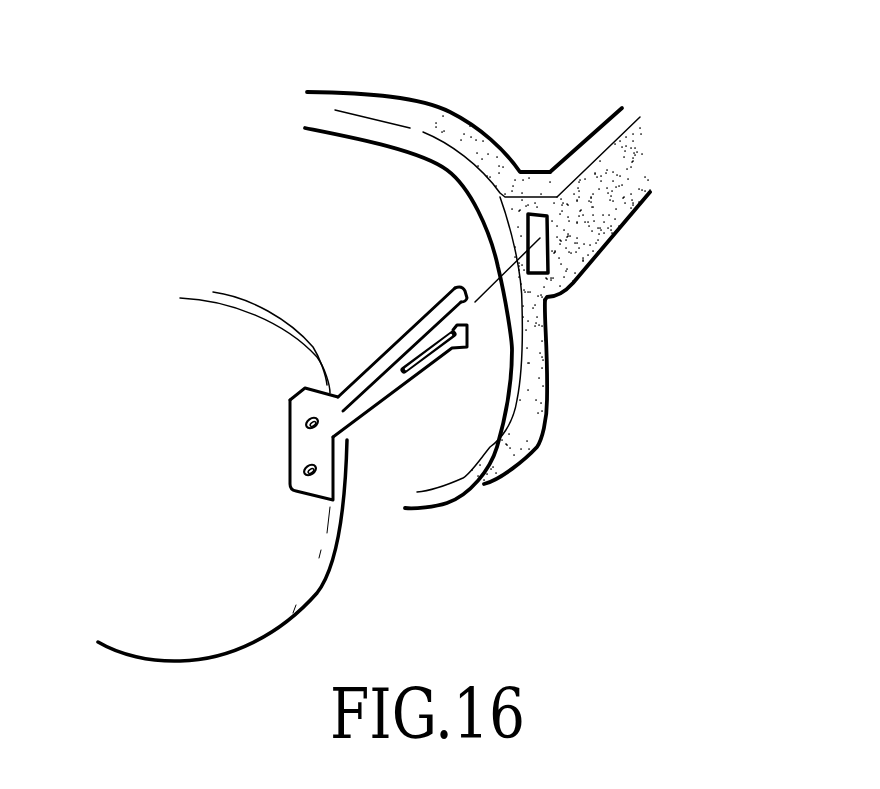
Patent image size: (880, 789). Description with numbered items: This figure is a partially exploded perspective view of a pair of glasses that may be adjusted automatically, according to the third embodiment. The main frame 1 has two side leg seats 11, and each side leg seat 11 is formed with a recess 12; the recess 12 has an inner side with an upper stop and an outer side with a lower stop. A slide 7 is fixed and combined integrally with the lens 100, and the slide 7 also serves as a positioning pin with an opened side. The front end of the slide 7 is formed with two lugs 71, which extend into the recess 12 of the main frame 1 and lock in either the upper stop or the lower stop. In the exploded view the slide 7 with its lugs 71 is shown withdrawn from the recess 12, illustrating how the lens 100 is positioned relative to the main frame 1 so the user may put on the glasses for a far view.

The main frame 1 is at (425, 110).
The side leg seat 11 is at (617, 218).
The recess 12 is at (552, 258).
The slide 7 is at (373, 412).
The lugs 71 is at (455, 292).
The lens 100 is at (293, 580).